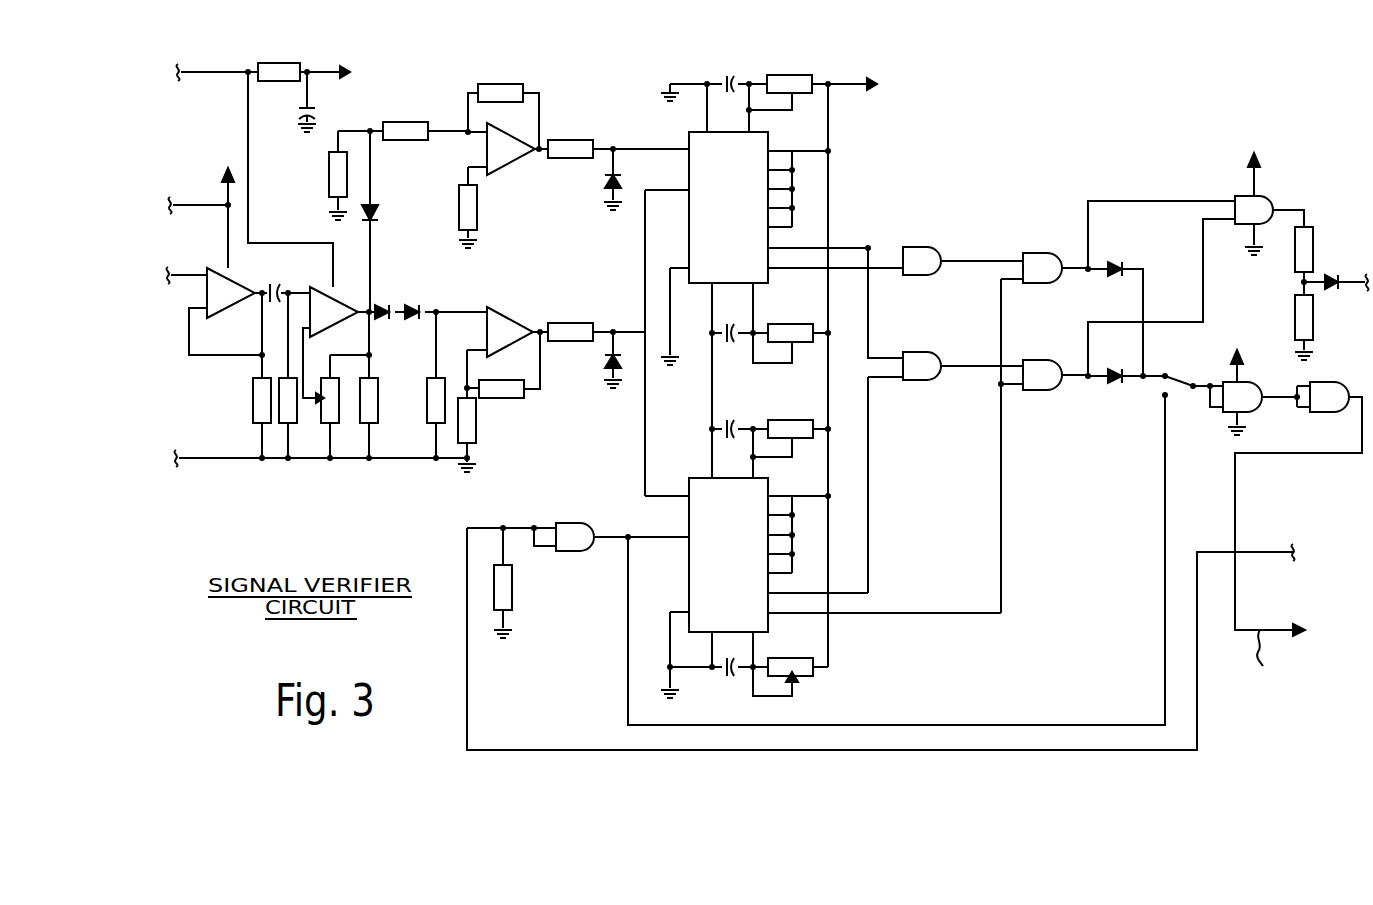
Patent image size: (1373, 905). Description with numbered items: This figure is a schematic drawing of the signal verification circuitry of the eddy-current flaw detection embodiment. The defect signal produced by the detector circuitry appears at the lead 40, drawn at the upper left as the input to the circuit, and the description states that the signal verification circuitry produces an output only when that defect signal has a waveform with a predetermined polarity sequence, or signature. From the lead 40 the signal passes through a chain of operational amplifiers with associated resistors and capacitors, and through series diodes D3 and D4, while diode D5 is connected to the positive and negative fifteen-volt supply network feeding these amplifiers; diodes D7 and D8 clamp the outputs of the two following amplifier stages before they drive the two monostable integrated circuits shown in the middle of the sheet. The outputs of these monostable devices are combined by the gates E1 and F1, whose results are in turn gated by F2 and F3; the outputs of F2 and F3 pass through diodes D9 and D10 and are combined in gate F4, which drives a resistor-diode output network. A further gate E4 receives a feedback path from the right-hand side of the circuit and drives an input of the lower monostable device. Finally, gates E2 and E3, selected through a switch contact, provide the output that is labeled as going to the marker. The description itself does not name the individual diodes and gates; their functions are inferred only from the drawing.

The lead 40 is at (168, 276).
The diode D3 is at (387, 302).
The diode D4 is at (415, 324).
The diode D5 is at (382, 215).
The diode D7 is at (601, 360).
The diode D8 is at (601, 179).
The diode 1N916 D9 is at (1117, 267).
The diode 1N916 D10 is at (1117, 374).
The AND gate E1 is at (922, 261).
The AND gate E2 is at (1242, 397).
The AND gate E3 is at (1329, 397).
The AND gate E4 is at (575, 537).
The AND gate F1 is at (922, 366).
The AND gate F2 is at (1042, 268).
The AND gate F3 is at (1042, 375).
The AND gate F4 is at (1254, 210).